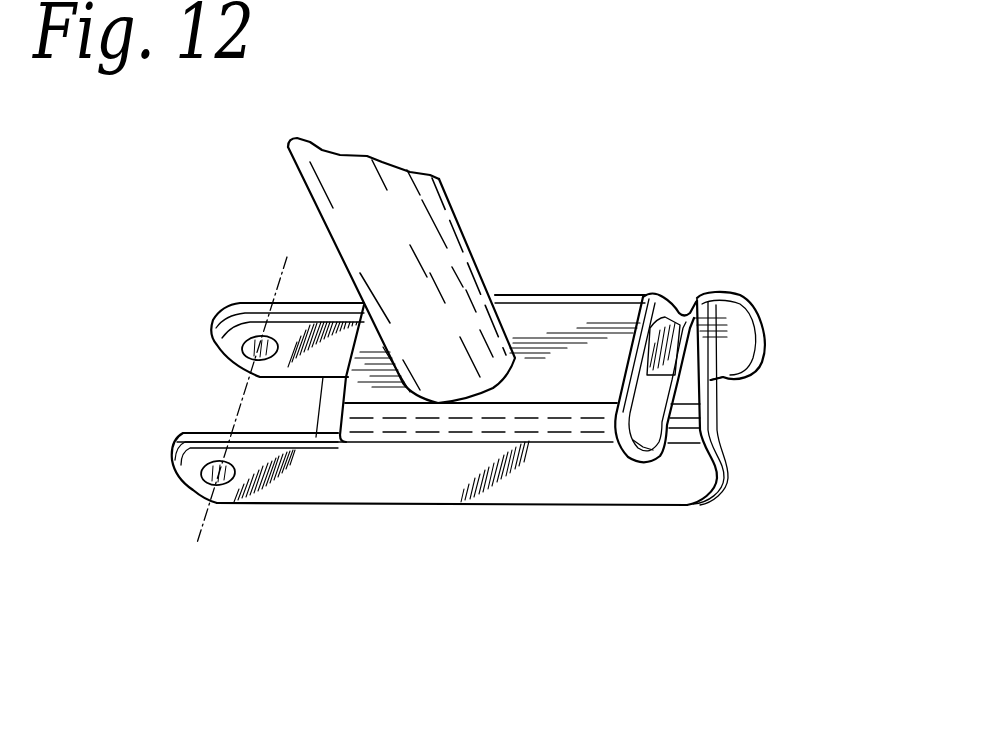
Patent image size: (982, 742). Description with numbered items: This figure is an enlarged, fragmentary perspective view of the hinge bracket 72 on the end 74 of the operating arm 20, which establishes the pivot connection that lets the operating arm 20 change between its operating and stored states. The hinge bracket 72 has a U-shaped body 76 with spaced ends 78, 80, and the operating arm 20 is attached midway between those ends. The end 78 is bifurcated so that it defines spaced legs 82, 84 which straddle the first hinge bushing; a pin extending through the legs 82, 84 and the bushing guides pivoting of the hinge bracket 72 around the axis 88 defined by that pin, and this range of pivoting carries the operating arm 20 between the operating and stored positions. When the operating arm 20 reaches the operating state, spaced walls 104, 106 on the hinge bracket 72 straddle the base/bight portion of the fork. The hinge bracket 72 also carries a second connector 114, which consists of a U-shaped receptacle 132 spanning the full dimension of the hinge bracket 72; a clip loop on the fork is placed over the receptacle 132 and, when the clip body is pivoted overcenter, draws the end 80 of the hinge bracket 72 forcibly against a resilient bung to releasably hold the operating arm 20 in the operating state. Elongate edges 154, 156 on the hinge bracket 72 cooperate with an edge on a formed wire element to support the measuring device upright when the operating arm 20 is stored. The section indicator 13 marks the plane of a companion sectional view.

The operating arm 20 is at (450, 230).
The end of the operating arm 74 is at (477, 300).
The second connector 114 is at (682, 251).
The spaced wall 104 is at (680, 315).
The end of the U-shaped body 80 is at (758, 312).
The end of the U-shaped body 78 is at (225, 337).
The leg 82 is at (290, 330).
The section line 13- 13 is at (180, 372).
The axis 88 is at (200, 527).
The leg 84 is at (283, 487).
The elongate edge 154 is at (316, 437).
The elongate edge 156 is at (406, 503).
The U-shaped body 76 is at (452, 432).
The hinge bracket 72 is at (570, 487).
The U-shaped receptacle 132 is at (636, 462).
The spaced wall 106 is at (677, 490).